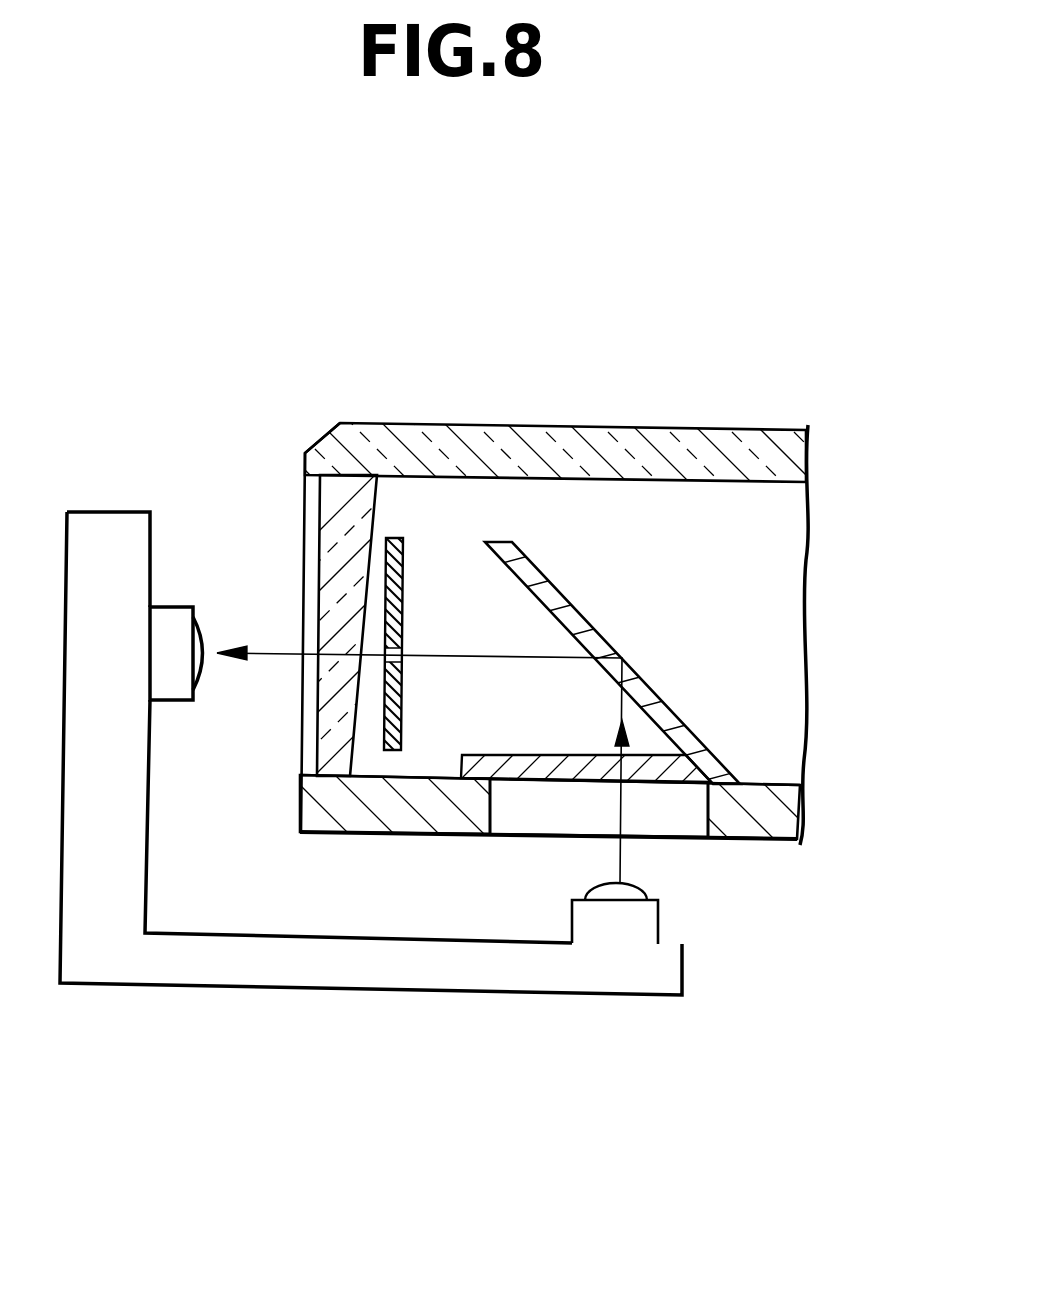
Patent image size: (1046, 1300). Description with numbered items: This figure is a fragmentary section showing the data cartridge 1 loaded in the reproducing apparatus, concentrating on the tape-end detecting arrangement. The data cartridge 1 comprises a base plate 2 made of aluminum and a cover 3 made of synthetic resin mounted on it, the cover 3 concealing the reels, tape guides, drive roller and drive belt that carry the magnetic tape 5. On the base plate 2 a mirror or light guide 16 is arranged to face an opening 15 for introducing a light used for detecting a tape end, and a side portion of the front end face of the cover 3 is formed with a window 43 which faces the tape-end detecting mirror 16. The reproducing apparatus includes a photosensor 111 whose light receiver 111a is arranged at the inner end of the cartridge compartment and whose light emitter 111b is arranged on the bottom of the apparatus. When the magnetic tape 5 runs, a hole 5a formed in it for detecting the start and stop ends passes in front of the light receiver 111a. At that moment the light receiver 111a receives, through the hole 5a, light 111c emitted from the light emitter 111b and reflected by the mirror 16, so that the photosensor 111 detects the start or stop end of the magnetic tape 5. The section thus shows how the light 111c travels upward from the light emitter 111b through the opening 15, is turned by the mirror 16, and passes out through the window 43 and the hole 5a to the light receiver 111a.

The data cartridge 1 is at (770, 428).
The base plate 2 is at (771, 776).
The cover 3 is at (783, 463).
The magnetic tape 5 is at (404, 574).
The hole 5a is at (407, 657).
The opening 15 is at (683, 830).
The mirror or light guide 16 is at (600, 608).
The window 43 is at (312, 527).
The photosensor 111 is at (371, 844).
The light receiver 111a is at (177, 700).
The light emitter 111b is at (573, 918).
The light 111c is at (447, 658).